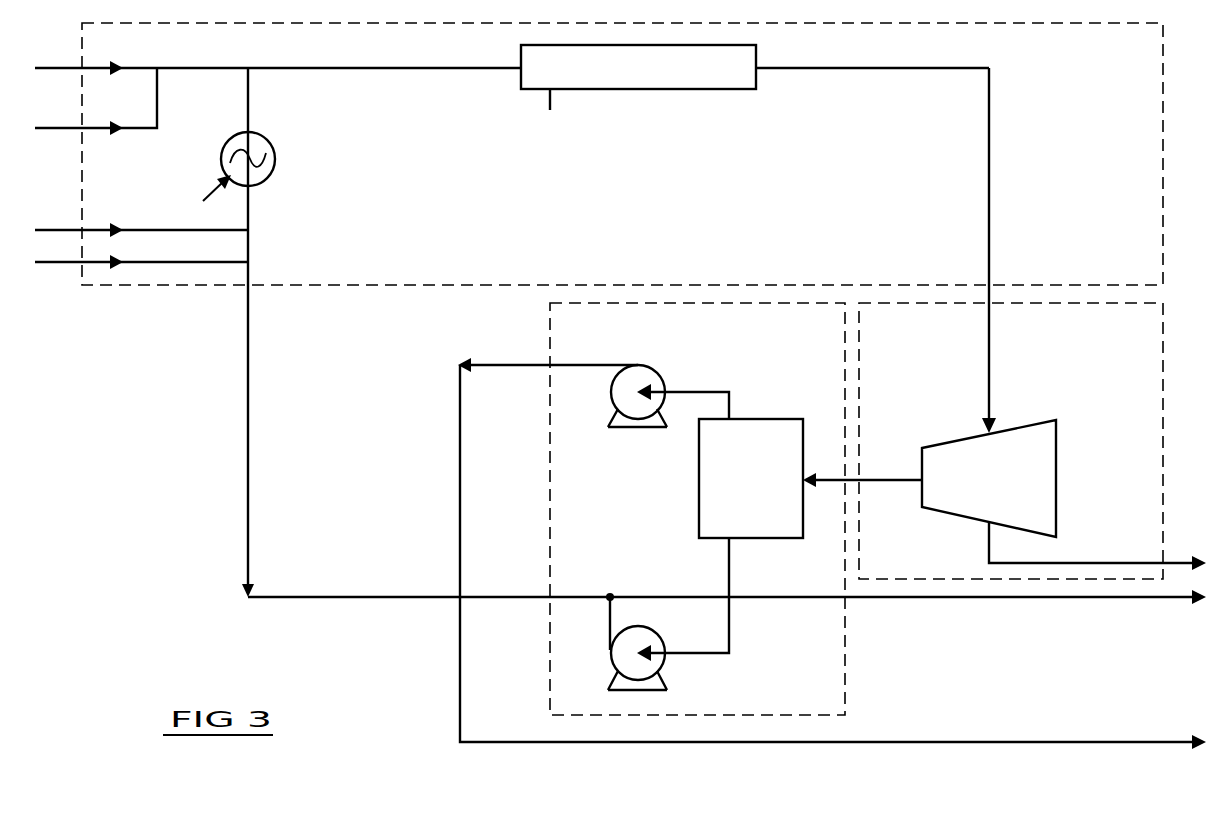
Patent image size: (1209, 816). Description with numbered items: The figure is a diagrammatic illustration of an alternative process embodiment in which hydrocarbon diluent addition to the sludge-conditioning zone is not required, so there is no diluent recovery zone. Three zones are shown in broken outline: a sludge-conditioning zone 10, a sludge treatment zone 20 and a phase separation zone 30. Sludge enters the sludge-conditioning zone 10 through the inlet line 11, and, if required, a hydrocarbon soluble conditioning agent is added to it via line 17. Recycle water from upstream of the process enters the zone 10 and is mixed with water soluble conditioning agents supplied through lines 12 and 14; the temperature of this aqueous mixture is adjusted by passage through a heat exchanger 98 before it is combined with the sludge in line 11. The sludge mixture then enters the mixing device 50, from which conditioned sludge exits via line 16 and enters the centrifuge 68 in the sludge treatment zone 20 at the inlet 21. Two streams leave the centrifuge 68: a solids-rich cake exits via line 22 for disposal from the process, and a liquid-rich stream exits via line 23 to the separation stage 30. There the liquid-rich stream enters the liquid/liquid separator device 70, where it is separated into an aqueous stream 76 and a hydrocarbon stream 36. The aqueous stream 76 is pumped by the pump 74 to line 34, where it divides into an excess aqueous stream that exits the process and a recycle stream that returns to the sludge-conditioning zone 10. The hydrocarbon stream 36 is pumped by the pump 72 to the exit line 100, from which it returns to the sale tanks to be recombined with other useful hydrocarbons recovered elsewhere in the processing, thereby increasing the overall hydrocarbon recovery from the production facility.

The sludge-conditioning zone 10 is at (1167, 72).
The inlet line 11 is at (62, 66).
The line 12 is at (62, 229).
The line 14 is at (65, 267).
The line 16 is at (990, 155).
The line 17 is at (62, 126).
The sludge treatment zone 20 is at (1165, 368).
The centrifuge inlet 21 is at (992, 362).
The line 22 is at (1100, 562).
The line 23 is at (878, 478).
The phase separation zone 30 is at (852, 675).
The line 34 is at (640, 597).
The hydrocarbon stream 36 is at (695, 391).
The mixing device 50 is at (720, 90).
The centrifuge 68 is at (1041, 418).
The liquid/liquid separator device 70 is at (775, 419).
The pump 72 is at (639, 364).
The pump 74 is at (659, 641).
The aqueous stream 76 is at (733, 586).
The heat exchanger 98 is at (272, 146).
The exit line 100 is at (833, 557).